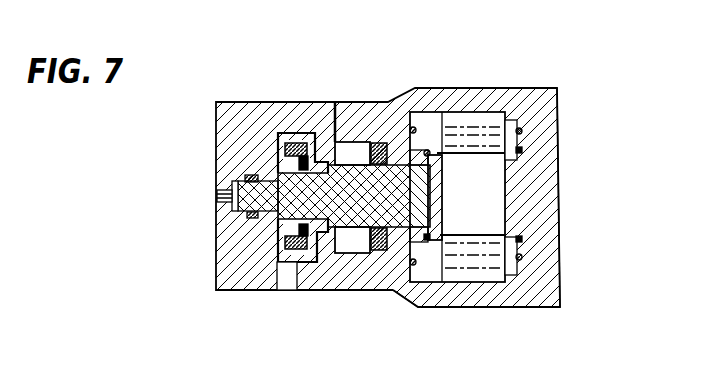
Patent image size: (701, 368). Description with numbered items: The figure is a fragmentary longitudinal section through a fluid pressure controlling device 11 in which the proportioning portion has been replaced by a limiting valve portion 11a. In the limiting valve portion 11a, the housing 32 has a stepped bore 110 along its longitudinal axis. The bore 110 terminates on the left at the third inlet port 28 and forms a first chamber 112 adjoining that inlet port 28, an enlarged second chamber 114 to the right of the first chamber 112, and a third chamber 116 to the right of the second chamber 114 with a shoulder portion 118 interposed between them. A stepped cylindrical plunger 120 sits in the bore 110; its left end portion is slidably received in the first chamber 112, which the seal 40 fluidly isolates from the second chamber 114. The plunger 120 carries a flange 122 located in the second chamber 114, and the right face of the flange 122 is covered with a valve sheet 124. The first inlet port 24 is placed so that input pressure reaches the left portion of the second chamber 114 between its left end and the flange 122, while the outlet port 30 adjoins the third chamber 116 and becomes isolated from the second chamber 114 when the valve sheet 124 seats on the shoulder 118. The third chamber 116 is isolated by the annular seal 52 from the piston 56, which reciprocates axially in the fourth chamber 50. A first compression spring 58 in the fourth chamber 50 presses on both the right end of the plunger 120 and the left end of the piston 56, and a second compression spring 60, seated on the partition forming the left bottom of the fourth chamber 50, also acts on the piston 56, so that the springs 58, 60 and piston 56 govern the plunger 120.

The fluid pressure controlling device 11 is at (474, 61).
The limiting valve portion 11a is at (277, 101).
The first inlet port 24 is at (287, 285).
The third inlet port 28 is at (226, 197).
The outlet port 30 is at (335, 102).
The housing 32 is at (228, 293).
The seal 40 is at (244, 178).
The fourth chamber 50 is at (500, 215).
The annular seal 52 is at (372, 166).
The piston 56 is at (555, 270).
The first compression spring 58 is at (447, 152).
The second compression spring 60 is at (427, 267).
The stepped bore 110 is at (364, 270).
The first chamber 112 is at (243, 210).
The second chamber 114 is at (283, 150).
The third chamber 116 is at (353, 152).
The shoulder portion 118 is at (354, 196).
The stepped cylindrical plunger 120 is at (345, 253).
The flange 122 is at (280, 234).
The valve sheet 124 is at (303, 252).